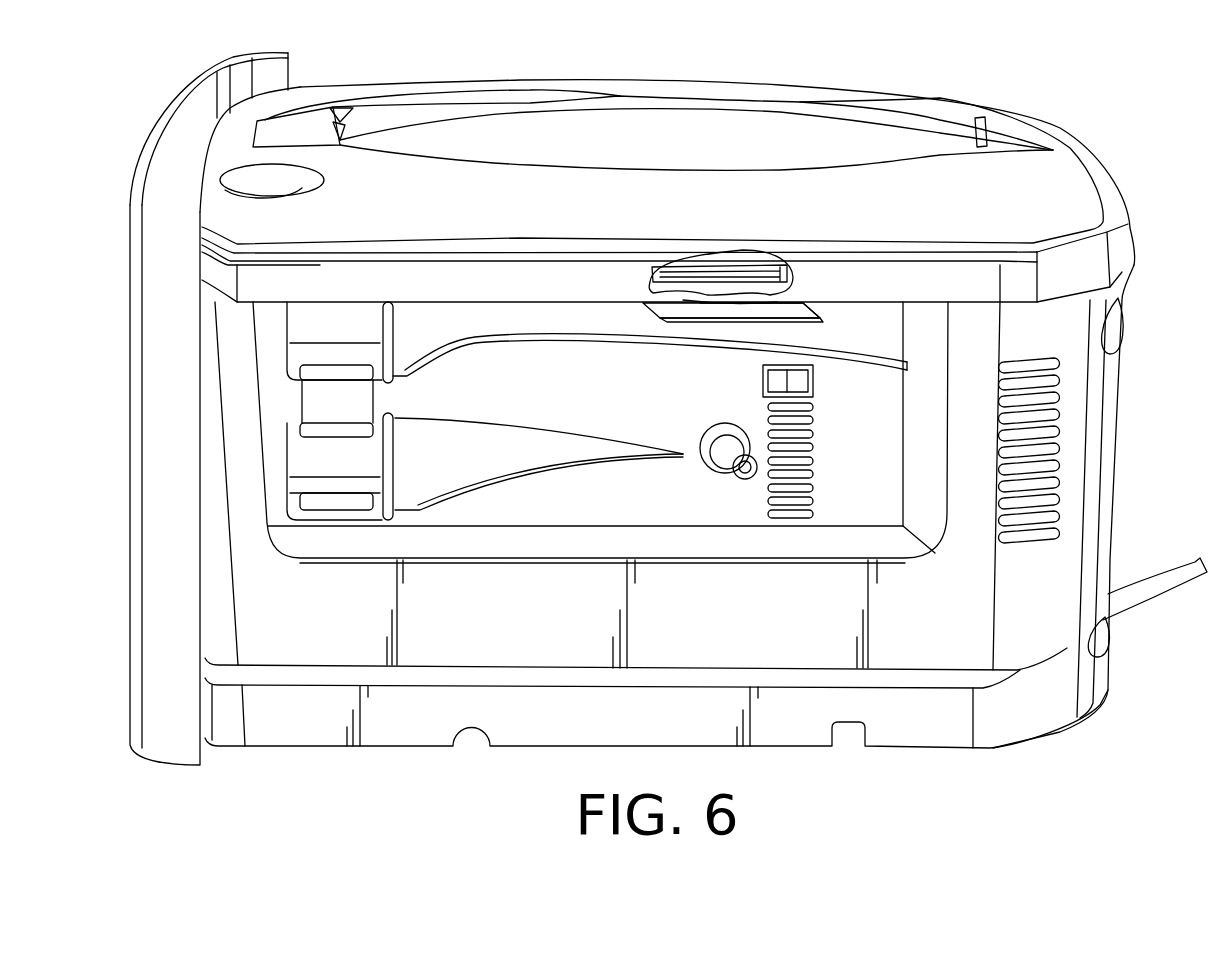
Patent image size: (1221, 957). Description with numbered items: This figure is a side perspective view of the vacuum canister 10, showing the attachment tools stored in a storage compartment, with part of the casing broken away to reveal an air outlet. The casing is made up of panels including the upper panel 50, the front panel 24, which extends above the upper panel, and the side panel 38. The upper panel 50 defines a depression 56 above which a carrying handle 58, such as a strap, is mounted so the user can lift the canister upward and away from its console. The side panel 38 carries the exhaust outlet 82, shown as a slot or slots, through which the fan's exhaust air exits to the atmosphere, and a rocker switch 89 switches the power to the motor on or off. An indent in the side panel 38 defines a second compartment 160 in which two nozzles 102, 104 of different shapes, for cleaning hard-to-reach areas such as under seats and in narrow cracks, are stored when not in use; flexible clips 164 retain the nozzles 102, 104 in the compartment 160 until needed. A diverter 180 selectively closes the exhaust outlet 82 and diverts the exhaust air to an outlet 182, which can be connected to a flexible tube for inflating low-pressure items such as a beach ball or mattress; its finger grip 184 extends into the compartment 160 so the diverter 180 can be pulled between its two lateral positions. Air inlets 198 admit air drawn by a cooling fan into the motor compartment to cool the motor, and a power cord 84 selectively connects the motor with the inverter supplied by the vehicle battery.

The canister 10 is at (165, 97).
The front panel 24 is at (155, 362).
The side panel 38 is at (250, 610).
The upper panel 50 is at (1073, 178).
The depression 56 is at (608, 138).
The carrying handle 58 is at (647, 93).
The exhaust outlet 82 is at (752, 270).
The rocker switch 89 is at (820, 383).
The nozzle 102 is at (543, 323).
The nozzle 104 is at (505, 472).
The second compartment 160 is at (865, 513).
The flexible clips 164 is at (347, 505).
The diverter 180 is at (680, 307).
The outlet 182 is at (740, 477).
The finger grip 184 is at (773, 303).
The air inlets 198 is at (807, 437).
The power cord 84 is at (1157, 590).